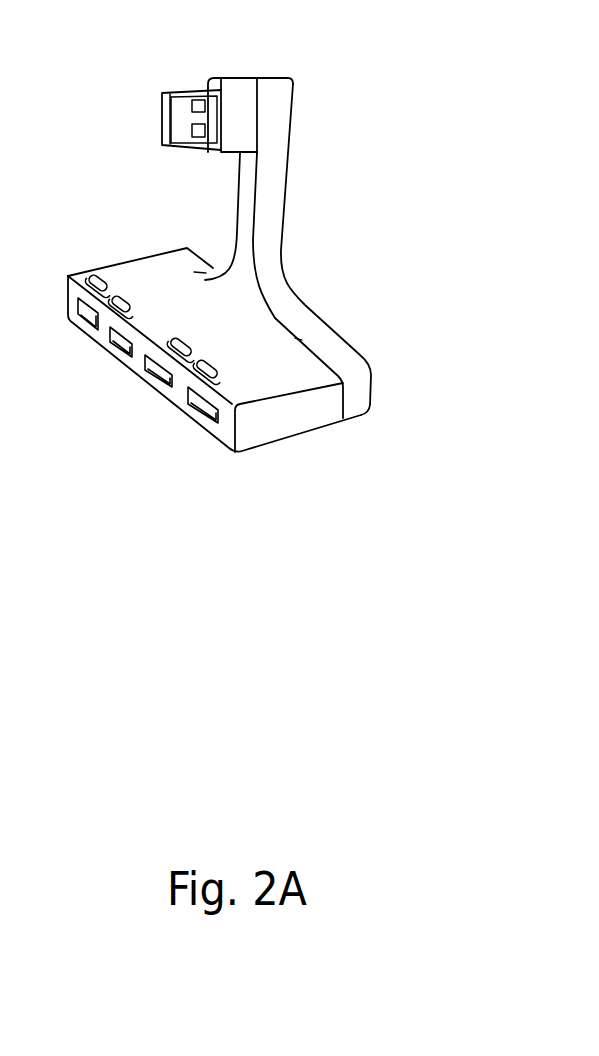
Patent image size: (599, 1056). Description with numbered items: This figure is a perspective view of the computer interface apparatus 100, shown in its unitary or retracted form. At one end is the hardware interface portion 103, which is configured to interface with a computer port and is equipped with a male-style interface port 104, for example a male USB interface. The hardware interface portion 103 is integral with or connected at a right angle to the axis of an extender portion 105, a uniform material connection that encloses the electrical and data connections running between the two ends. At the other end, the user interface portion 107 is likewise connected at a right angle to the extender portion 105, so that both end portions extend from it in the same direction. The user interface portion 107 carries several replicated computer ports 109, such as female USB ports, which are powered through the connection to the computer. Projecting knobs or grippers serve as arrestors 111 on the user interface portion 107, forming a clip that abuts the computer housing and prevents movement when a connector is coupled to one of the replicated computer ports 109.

The computer interface apparatus 100 is at (380, 493).
The hardware interface portion 103 is at (196, 79).
The interface port 104 is at (231, 80).
The extender portion 105 is at (287, 178).
The user interface portion 107 is at (267, 446).
The replicated computer ports 109 is at (200, 415).
The arrestors 111 is at (95, 275).